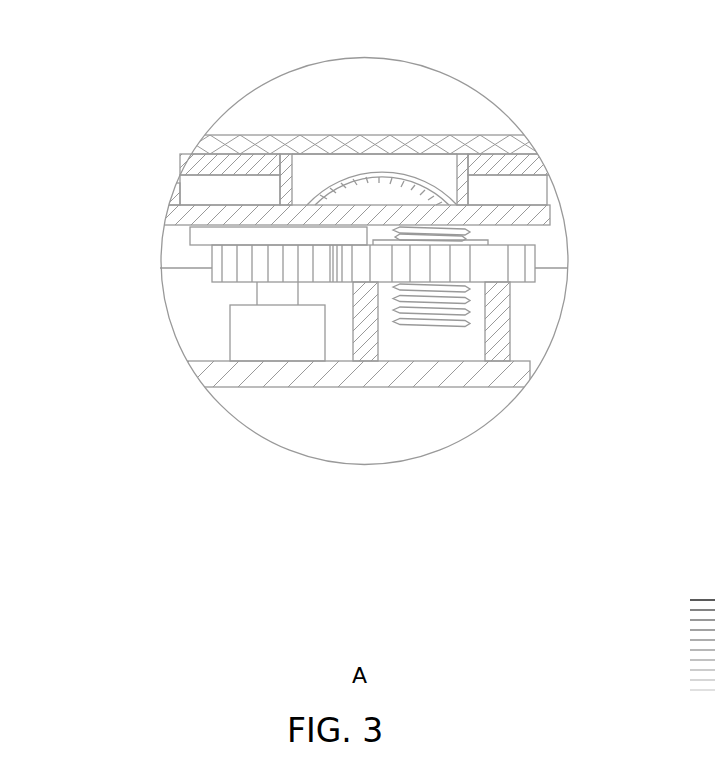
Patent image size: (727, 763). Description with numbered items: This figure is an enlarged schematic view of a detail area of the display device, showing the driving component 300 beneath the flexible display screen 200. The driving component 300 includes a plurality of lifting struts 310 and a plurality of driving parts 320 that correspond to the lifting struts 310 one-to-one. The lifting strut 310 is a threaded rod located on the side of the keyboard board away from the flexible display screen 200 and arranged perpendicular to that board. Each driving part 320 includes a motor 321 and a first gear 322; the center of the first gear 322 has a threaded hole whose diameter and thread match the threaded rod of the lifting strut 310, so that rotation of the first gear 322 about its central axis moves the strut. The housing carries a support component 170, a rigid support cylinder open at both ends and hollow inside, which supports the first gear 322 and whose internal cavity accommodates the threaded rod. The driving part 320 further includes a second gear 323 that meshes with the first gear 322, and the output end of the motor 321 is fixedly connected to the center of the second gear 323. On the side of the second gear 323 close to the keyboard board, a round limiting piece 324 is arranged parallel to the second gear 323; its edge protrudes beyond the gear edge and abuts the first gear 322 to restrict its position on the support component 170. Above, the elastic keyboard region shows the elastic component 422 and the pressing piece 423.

The flexible display screen 200 is at (263, 147).
The elastic component 422 is at (375, 173).
The pressing piece 423 is at (397, 162).
The support component 170 is at (497, 312).
The driving component 300 is at (300, 428).
The lifting strut 310 is at (427, 325).
The driving part 320 is at (299, 373).
The motor 321 is at (262, 343).
The first gear 322 is at (400, 262).
The second gear 323 is at (232, 268).
The limiting piece 324 is at (213, 237).